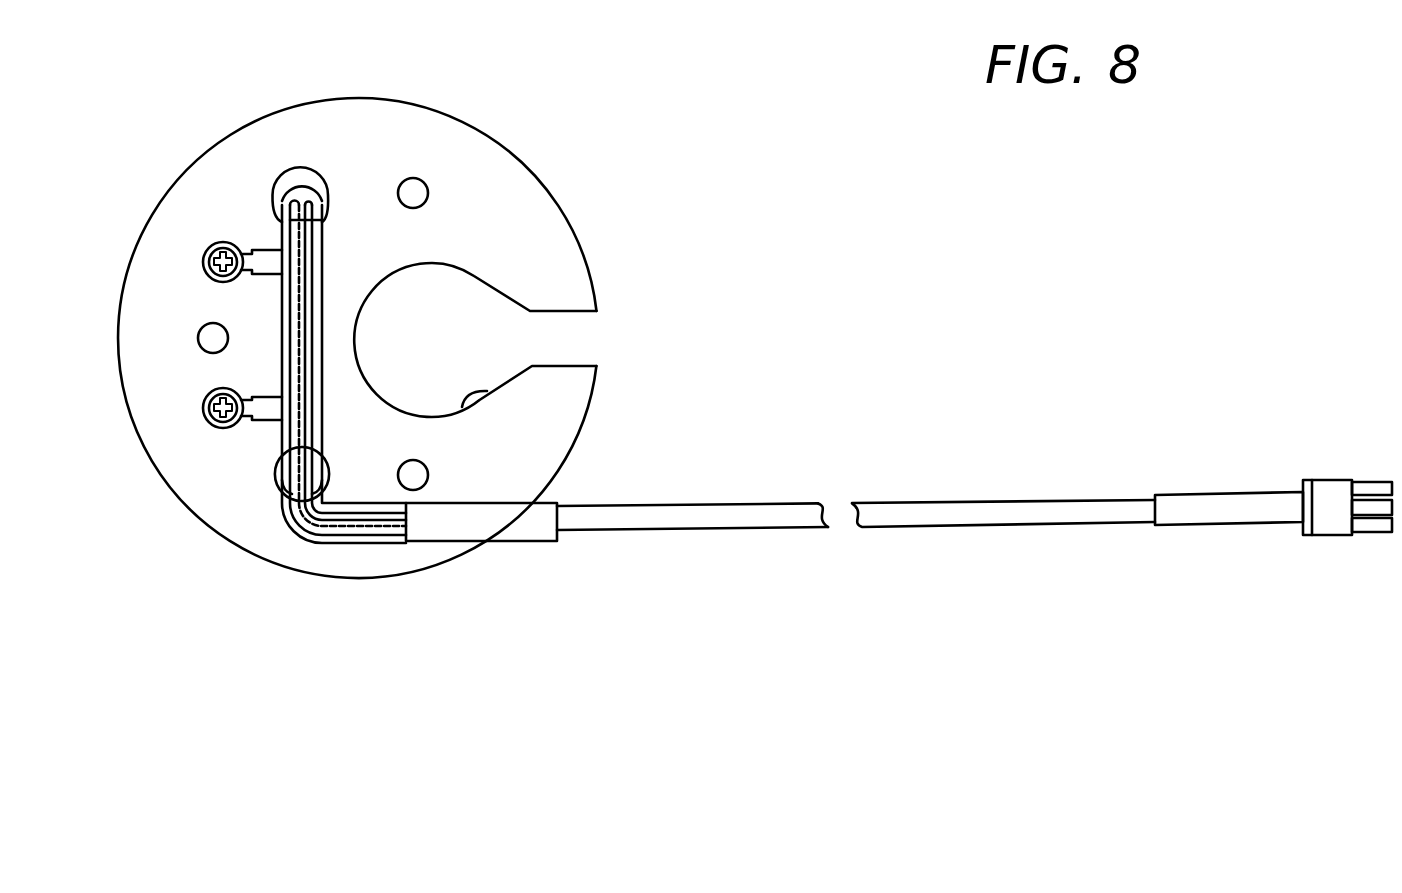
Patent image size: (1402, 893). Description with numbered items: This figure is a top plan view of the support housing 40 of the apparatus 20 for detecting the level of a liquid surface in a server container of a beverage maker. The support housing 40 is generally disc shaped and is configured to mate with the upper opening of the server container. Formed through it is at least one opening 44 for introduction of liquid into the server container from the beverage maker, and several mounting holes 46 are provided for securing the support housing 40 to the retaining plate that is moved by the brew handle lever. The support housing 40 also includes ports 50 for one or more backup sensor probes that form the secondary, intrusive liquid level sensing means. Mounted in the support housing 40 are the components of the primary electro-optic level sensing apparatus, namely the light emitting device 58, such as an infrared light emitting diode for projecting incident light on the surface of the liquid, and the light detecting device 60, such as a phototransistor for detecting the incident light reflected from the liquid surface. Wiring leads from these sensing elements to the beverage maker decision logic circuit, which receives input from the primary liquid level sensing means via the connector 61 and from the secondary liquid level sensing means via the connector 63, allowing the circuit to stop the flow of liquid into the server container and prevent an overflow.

The apparatus 20 is at (652, 213).
The support housing 40 is at (470, 143).
The opening 44 is at (487, 391).
The mounting holes 46 is at (412, 177).
The ports 50 is at (224, 242).
The light emitting device 58 is at (328, 205).
The light detecting device 60 is at (320, 455).
The connector 61 is at (266, 277).
The connector 63 is at (355, 541).